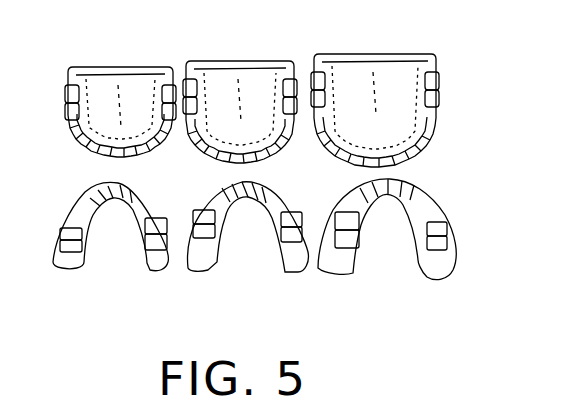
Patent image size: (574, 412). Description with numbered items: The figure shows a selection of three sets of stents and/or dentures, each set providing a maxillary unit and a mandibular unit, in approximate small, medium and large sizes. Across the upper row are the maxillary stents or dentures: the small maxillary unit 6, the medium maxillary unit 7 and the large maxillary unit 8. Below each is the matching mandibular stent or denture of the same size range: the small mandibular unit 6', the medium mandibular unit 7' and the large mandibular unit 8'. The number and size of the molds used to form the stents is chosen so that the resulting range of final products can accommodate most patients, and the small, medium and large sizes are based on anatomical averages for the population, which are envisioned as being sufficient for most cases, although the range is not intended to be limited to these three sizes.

The small maxillary stent or denture 6 is at (120, 84).
The medium maxillary stent or denture 7 is at (240, 84).
The large maxillary stent or denture 8 is at (375, 85).
The small mandibular stent or denture 6' is at (110, 241).
The medium mandibular stent or denture 7' is at (248, 245).
The large mandibular stent or denture 8' is at (387, 241).